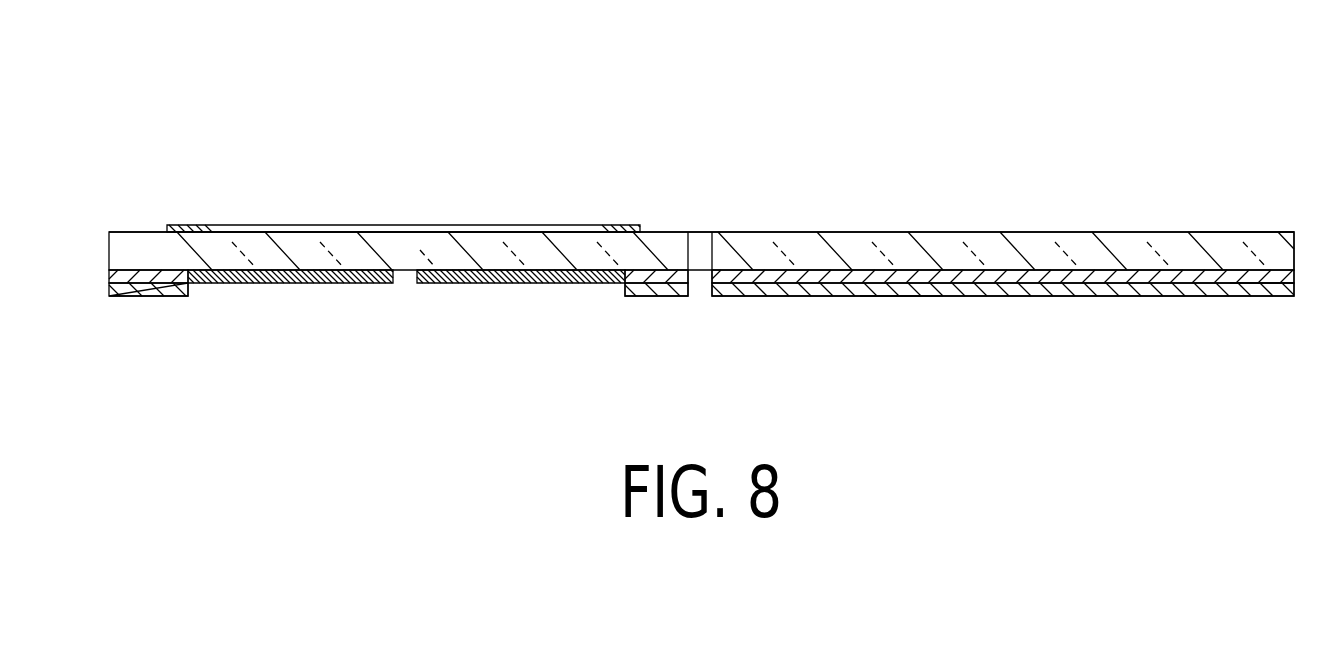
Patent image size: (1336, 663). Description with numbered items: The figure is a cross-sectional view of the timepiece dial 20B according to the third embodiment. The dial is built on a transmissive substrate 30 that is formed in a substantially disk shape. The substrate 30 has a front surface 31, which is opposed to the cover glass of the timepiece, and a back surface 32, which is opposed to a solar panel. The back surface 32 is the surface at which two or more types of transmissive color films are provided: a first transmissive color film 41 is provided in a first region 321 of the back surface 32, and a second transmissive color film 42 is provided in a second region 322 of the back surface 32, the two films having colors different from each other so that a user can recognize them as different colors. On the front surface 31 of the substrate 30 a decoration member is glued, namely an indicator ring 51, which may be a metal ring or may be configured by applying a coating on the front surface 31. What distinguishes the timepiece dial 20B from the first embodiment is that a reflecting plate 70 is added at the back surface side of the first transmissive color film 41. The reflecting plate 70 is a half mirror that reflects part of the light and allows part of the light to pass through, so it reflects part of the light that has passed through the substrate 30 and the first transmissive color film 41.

The timepiece dial 20B is at (1223, 135).
The substrate 30 is at (1083, 240).
The front surface 31 is at (1263, 232).
The back surface 32 is at (1262, 280).
The first region 321 is at (1155, 272).
The second region 322 is at (520, 283).
The first transmissive color film 41 is at (1010, 275).
The second transmissive color film 42 is at (310, 283).
The indicator ring 51 is at (615, 225).
The reflecting plate 70 is at (900, 296).